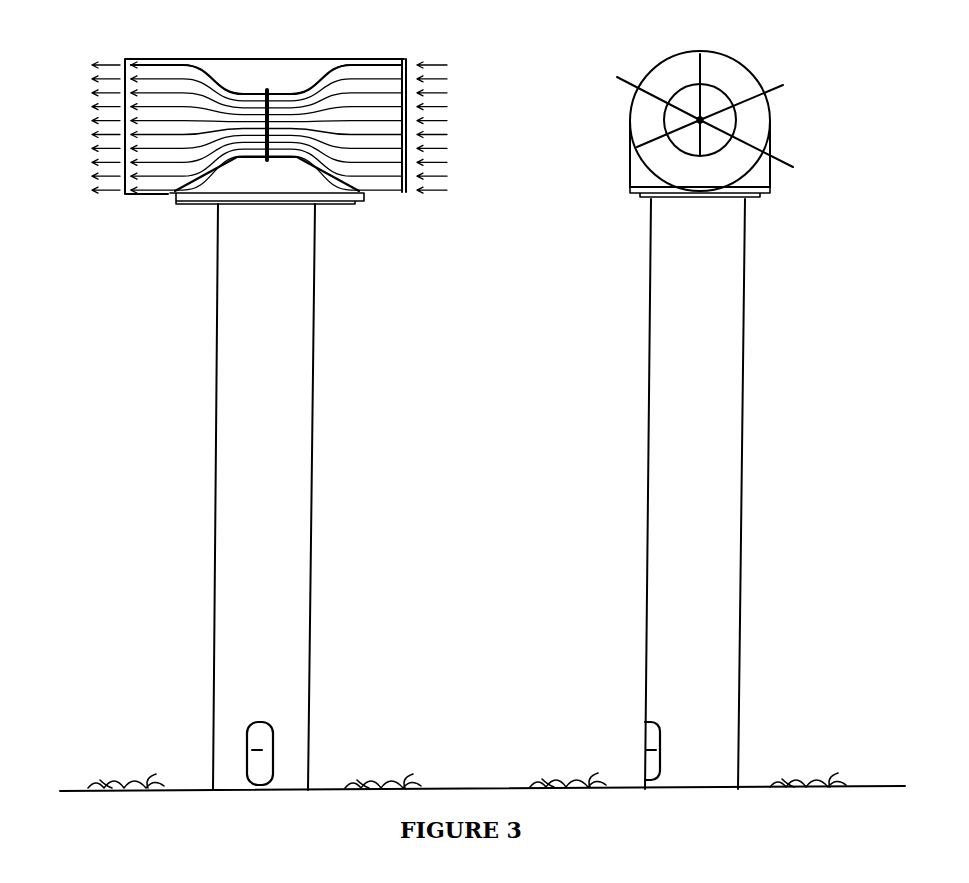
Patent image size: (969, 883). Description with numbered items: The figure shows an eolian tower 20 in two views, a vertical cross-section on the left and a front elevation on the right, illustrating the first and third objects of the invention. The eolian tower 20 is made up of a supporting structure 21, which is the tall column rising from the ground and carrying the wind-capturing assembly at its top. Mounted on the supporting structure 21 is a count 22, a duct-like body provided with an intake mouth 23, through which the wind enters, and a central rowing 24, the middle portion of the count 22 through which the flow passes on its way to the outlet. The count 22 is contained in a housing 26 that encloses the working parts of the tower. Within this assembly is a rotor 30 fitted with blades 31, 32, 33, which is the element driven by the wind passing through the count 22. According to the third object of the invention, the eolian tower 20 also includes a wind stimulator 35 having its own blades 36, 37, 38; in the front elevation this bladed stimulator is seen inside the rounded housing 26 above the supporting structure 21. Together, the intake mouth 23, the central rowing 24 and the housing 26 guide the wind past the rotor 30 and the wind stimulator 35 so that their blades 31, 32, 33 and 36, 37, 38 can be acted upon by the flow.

The eolian tower 20 is at (211, 362).
The supporting structure 21 is at (201, 538).
The count 22 is at (152, 61).
The intake mouth 23 is at (410, 69).
The central rowing 24 is at (303, 88).
The housing 26 is at (125, 88).
The rotor 30 is at (267, 90).
The blade 31 is at (645, 91).
The blade 32 is at (755, 97).
The blade 33 is at (761, 150).
The wind stimulator 35 is at (403, 57).
The blade 36 is at (700, 54).
The blade 37 is at (700, 120).
The blade 38 is at (640, 146).